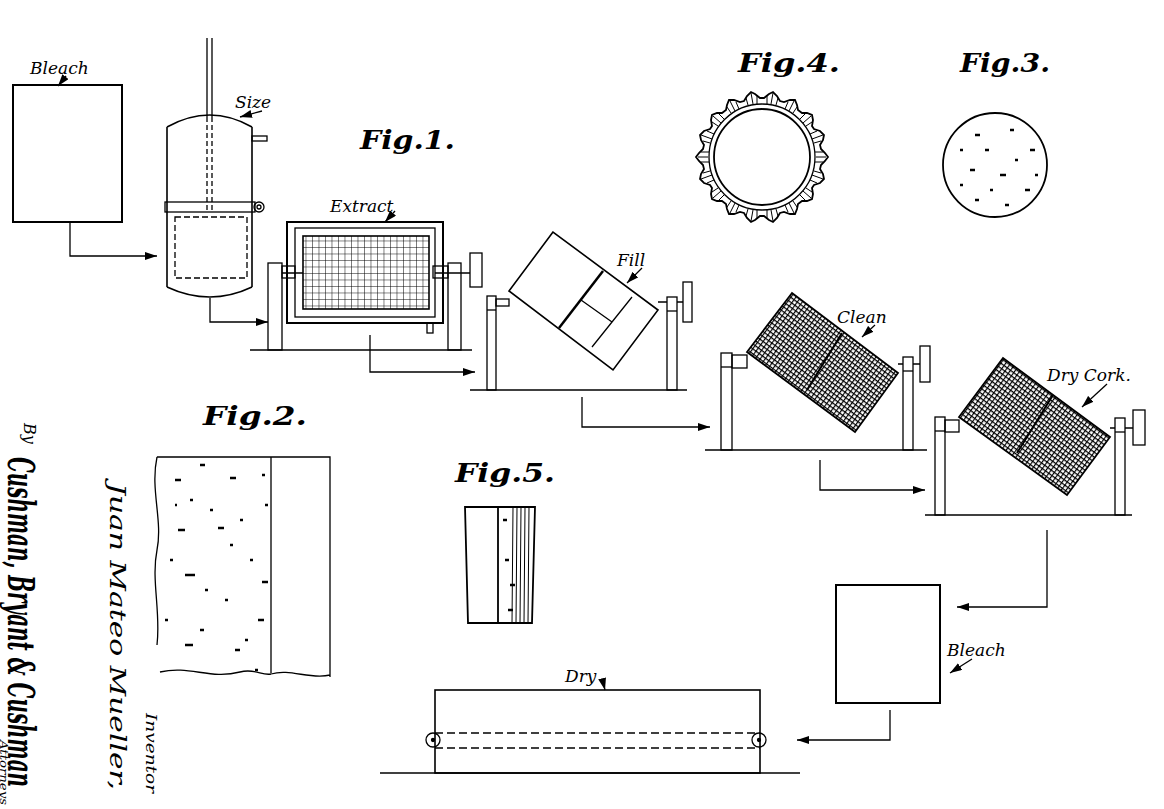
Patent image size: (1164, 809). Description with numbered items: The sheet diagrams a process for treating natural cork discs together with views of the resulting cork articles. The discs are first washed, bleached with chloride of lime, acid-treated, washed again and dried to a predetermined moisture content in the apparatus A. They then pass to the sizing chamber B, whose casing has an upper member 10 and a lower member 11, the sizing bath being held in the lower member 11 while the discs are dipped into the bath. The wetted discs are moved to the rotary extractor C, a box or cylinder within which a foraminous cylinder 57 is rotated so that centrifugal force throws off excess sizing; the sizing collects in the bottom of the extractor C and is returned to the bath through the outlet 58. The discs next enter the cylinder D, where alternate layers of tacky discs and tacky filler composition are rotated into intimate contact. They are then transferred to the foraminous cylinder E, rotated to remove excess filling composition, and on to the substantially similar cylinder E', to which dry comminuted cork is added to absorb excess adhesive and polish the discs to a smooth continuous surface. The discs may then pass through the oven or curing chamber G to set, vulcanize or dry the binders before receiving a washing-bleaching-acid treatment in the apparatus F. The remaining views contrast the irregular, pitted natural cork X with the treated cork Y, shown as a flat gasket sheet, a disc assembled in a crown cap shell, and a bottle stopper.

In FIG. 1, the apparatus A is at (67, 153).
In FIG. 1, the sizing chamber B is at (197, 118).
In FIG. 1, the upper member 10 is at (245, 181).
In FIG. 1, the lower member 11 is at (180, 258).
In FIG. 1, the rotary extractor C is at (312, 208).
In FIG. 1, the foraminous cylinder 57 is at (422, 236).
In FIG. 1, the outlet 58 is at (429, 334).
In FIG. 1, the cylinder D is at (586, 251).
In FIG. 1, the foraminous cylinder E is at (817, 357).
In FIG. 1, the cylinder E' is at (1035, 423).
In FIG. 1, the apparatus F is at (897, 576).
In FIG. 1, the oven or curing chamber G is at (653, 707).
In FIG. 2, the natural cork area X is at (220, 647).
In FIG. 3, the natural cork area X is at (973, 122).
In FIG. 5, the natural cork area X is at (520, 558).
In FIG. 2, the treated cork area Y is at (307, 653).
In FIG. 4, the treated cork area Y is at (738, 123).
In FIG. 5, the treated cork area Y is at (477, 557).